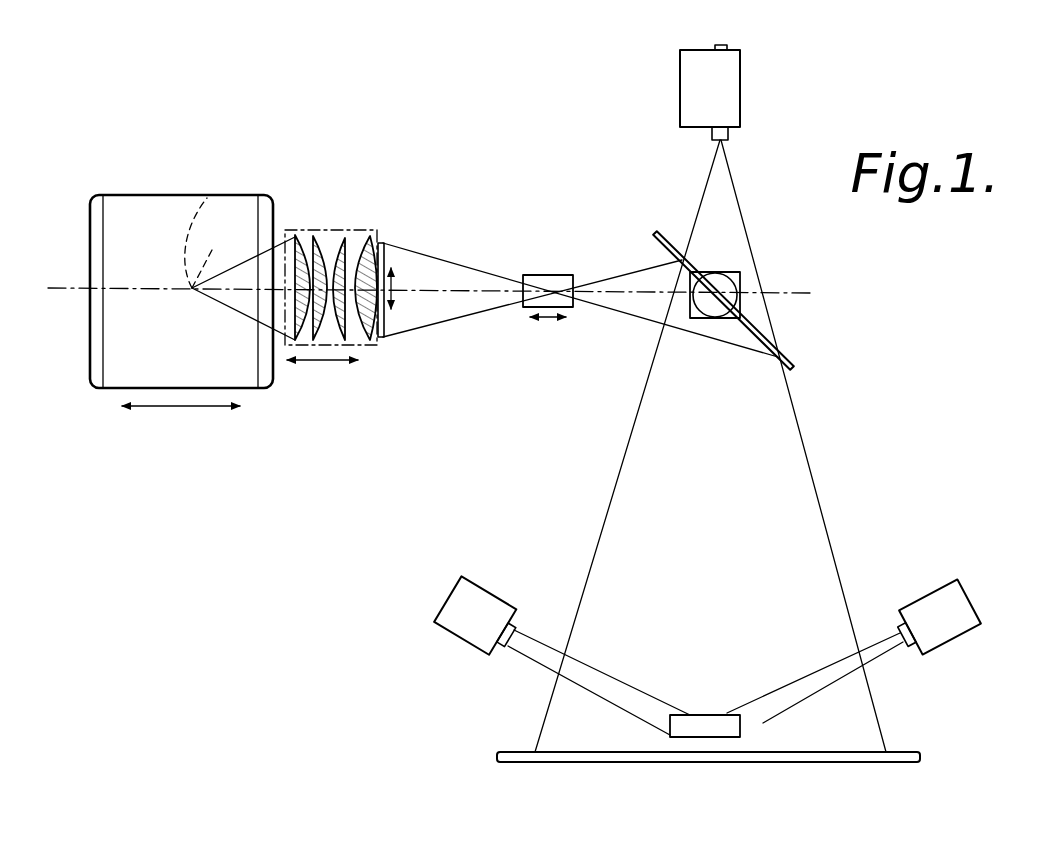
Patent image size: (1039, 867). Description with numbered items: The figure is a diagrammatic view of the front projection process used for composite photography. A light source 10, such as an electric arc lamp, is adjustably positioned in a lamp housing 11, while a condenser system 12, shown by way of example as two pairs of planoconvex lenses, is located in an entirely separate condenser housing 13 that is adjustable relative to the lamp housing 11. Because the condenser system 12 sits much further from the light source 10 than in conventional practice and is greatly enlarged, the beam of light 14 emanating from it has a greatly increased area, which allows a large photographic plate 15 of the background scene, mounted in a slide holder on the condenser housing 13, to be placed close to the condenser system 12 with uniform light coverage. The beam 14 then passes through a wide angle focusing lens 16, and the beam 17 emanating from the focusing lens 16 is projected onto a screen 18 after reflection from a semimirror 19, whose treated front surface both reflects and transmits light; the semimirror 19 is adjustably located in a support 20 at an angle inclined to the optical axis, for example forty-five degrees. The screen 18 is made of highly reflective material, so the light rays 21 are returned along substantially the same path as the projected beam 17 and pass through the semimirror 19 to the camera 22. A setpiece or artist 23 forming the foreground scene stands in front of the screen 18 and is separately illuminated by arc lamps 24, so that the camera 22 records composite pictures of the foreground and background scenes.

The light source 10 is at (207, 198).
The housing 11 is at (123, 370).
The condenser system 12 is at (313, 338).
The condenser housing 13 is at (371, 347).
The beam of light 14 is at (394, 336).
The plate 15 is at (385, 258).
The wide angle focusing lens 16 is at (552, 275).
The beam 17 is at (645, 320).
The screen 18 is at (558, 757).
The semimirror 19 is at (771, 338).
The support 20 is at (725, 285).
The light rays 21 is at (807, 468).
The camera 22 is at (717, 102).
The setpiece or artist 23 is at (703, 725).
The arc lamps 24 is at (462, 632).